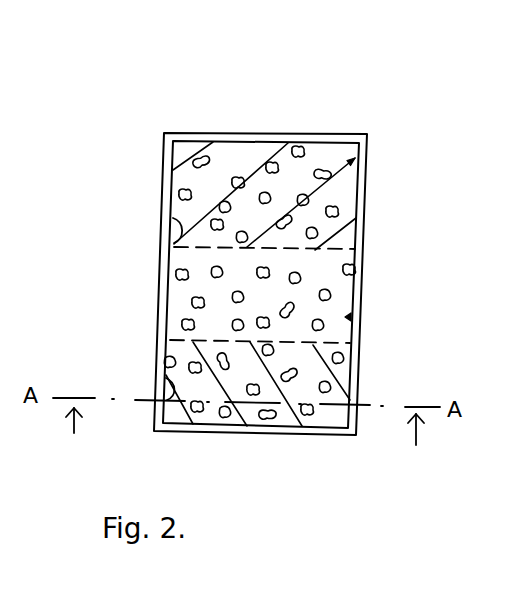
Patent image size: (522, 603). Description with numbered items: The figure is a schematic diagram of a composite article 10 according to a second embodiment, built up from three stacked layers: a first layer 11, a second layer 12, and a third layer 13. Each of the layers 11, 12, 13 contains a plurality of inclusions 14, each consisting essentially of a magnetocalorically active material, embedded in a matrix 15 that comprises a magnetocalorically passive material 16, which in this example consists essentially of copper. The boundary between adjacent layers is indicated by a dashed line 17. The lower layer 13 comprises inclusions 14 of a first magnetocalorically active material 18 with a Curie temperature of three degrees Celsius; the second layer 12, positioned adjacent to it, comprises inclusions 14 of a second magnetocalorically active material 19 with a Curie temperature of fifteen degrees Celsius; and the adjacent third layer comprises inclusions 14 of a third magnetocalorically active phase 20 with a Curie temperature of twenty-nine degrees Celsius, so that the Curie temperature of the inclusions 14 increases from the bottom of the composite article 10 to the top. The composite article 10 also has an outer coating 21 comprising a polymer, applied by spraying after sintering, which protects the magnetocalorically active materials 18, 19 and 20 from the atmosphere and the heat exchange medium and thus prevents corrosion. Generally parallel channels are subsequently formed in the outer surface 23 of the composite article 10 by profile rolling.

The composite article 10 is at (396, 60).
The first layer 11 is at (353, 192).
The second layer 12 is at (348, 298).
The third layer 13 is at (350, 389).
The inclusions 14 is at (302, 148).
The matrix 15 is at (228, 150).
The magnetocalorically passive material 16 is at (357, 158).
The dashed line 17 is at (353, 248).
The first magnetocalorically active material 18 is at (167, 362).
The second magnetocalorically active material 19 is at (178, 270).
The third magnetocalorically active phase 20 is at (180, 193).
The outer coating 21 is at (346, 139).
The outer surface 23 is at (172, 203).